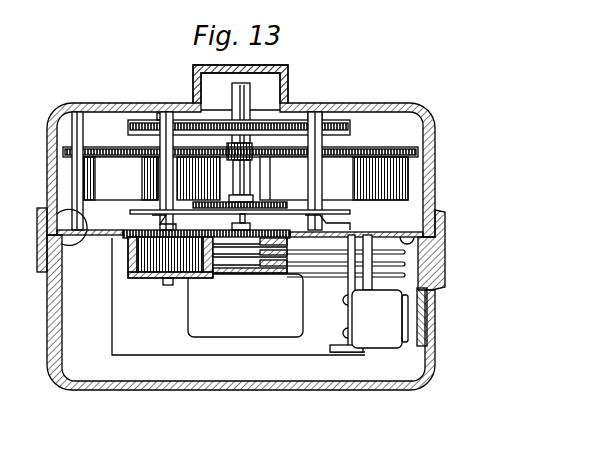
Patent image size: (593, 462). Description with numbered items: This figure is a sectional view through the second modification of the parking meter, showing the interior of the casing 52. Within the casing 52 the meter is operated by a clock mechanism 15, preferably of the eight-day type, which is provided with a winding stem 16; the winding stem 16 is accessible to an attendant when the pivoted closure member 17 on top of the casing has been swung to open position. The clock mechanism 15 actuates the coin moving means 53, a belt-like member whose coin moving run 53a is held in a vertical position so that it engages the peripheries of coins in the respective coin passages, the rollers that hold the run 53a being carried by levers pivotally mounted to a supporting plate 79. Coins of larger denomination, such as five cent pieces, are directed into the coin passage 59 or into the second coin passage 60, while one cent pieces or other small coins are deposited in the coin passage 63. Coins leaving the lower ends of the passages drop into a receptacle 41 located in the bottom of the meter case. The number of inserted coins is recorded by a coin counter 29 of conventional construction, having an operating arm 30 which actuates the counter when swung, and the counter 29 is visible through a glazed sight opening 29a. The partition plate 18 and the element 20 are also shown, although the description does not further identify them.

The clock mechanism 15 is at (378, 183).
The winding stem 16 is at (247, 98).
The pivoted closure member 17 is at (267, 65).
The partition plate 18 is at (132, 230).
The coil base 20 is at (148, 278).
The coin counter 29 is at (388, 311).
The glazed sight opening 29a is at (427, 324).
The operating arm 30 is at (400, 279).
The receptacle 41 is at (257, 347).
The casing 52 is at (398, 105).
The coin moving means 53 is at (130, 250).
The coin moving run 53a is at (200, 258).
The coin passage 59 is at (227, 268).
The second coin passage 60 is at (248, 245).
The coin passage 63 is at (257, 257).
The supporting plate 79 is at (78, 222).